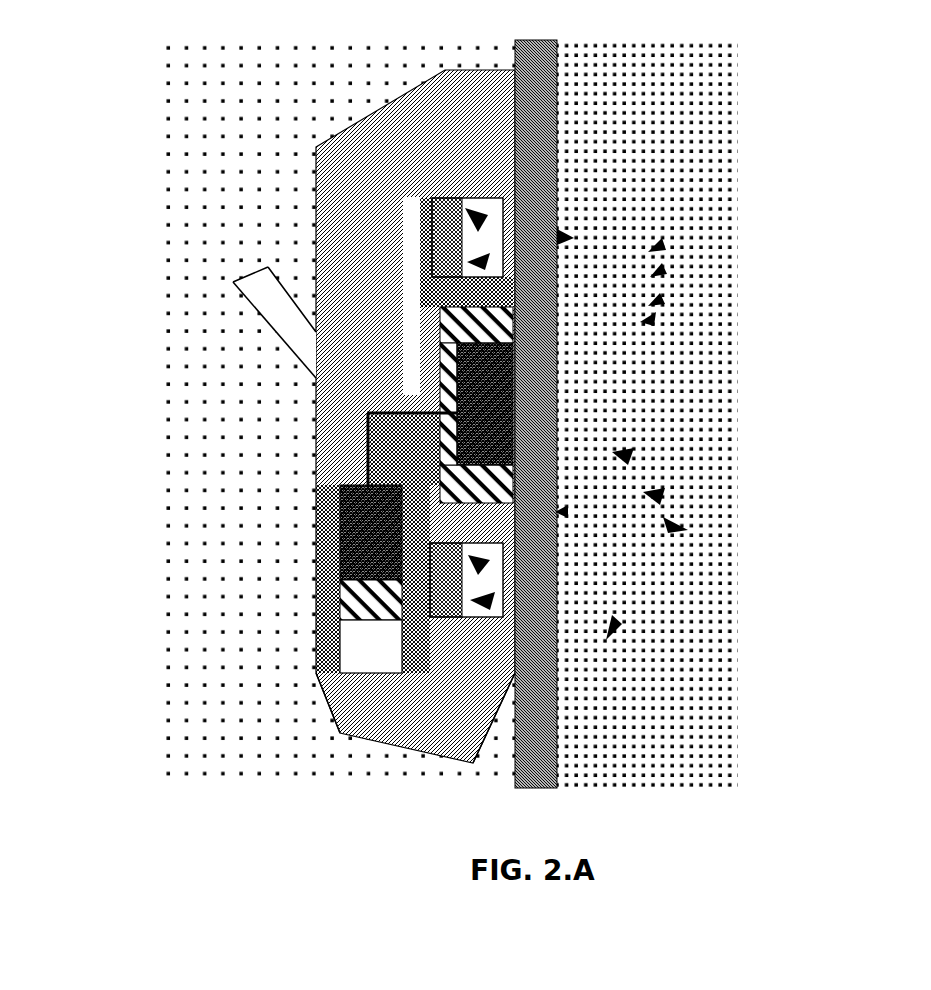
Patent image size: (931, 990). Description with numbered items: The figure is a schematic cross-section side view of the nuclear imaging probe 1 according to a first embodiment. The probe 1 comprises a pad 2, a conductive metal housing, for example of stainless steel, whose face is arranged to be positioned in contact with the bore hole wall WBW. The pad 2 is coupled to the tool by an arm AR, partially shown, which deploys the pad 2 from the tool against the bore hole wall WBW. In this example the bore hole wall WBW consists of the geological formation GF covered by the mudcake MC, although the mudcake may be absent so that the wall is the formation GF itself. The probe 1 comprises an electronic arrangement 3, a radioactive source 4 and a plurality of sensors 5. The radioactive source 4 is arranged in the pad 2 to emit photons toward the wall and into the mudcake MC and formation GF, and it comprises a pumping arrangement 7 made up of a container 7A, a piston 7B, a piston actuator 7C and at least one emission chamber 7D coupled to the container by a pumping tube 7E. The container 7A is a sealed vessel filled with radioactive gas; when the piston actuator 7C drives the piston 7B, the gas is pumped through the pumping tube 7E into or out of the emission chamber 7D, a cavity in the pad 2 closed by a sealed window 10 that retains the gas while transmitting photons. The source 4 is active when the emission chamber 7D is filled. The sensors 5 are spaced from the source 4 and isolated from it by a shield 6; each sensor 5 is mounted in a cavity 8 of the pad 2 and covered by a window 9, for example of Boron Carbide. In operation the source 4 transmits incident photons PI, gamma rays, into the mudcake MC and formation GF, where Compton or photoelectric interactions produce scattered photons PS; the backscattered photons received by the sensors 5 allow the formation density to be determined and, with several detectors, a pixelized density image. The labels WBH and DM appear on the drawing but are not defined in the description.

The first body half WBH is at (166, 73).
The nuclear imaging probe 1 is at (192, 130).
The pad 2 is at (303, 710).
The electronic arrangement 3 is at (388, 222).
The radioactive source 4 is at (316, 378).
The sensors 5 is at (440, 188).
The shield 6 is at (316, 283).
The pumping arrangement 7 is at (298, 640).
The container 7A is at (316, 533).
The piston 7B is at (316, 595).
The piston actuator 7C is at (316, 620).
The emission chamber 7D is at (316, 425).
The pumping tube 7E is at (316, 455).
The cavity 8 is at (557, 528).
The window 9 is at (518, 593).
The window 10 is at (515, 410).
The arm AR is at (262, 330).
The mudcake MC is at (543, 42).
The geological formation GF is at (748, 742).
The scattered photon PS is at (662, 262).
The incident photon PI is at (648, 327).
The bore hole wall WBW is at (530, 714).
The dielectric medium DM is at (215, 771).